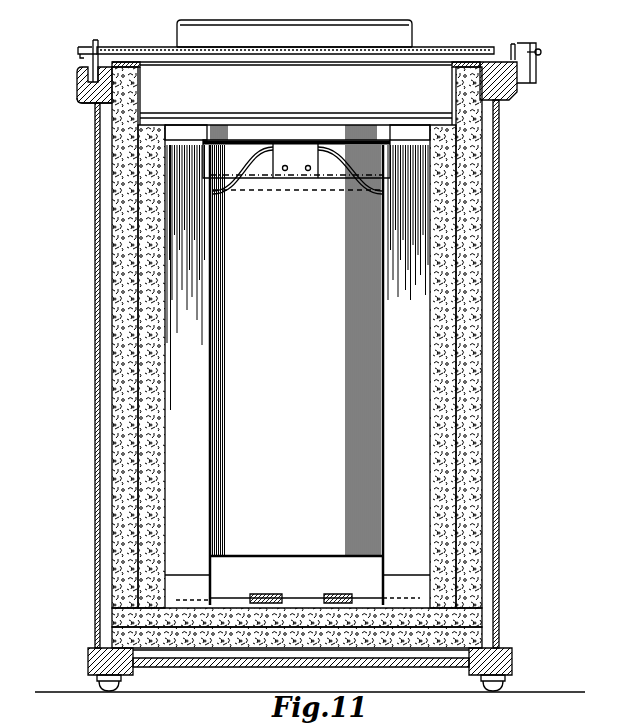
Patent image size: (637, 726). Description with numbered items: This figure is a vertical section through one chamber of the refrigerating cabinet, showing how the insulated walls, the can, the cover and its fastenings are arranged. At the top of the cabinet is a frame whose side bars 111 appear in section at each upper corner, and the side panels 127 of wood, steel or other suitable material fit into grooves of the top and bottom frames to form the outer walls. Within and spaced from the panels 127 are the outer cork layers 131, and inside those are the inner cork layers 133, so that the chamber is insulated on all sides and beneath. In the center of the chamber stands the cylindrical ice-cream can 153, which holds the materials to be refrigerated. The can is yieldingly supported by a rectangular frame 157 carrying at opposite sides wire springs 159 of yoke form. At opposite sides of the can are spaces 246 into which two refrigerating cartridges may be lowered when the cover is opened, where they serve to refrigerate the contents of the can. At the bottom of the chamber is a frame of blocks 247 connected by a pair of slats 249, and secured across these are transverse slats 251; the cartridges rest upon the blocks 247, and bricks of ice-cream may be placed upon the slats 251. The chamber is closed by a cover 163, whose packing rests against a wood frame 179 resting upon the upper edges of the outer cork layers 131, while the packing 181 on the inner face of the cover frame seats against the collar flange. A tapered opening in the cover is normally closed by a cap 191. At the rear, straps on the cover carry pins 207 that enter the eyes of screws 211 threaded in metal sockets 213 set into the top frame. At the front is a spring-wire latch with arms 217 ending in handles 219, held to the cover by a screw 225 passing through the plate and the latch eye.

The side bars 111 is at (79, 96).
The side panels 127 is at (95, 362).
The outer cork layers 131 is at (118, 385).
The inner cork layers 133 is at (145, 403).
The ice-cream can 153 is at (297, 375).
The rectangular frame 157 is at (258, 180).
The wire springs 159 is at (343, 160).
The cover 163 is at (175, 50).
The wood frame 179 is at (128, 63).
The packing 181 is at (186, 123).
The cap 191 is at (399, 38).
The pins 207 is at (79, 52).
The screws 211 is at (92, 42).
The metal sockets 213 is at (77, 80).
The arms 217 is at (462, 49).
The handles 219 is at (541, 52).
The screw 225 is at (531, 71).
The spaces 246 is at (175, 132).
The blocks 247 is at (175, 588).
The slats 249 is at (226, 598).
The slats 251 is at (276, 598).